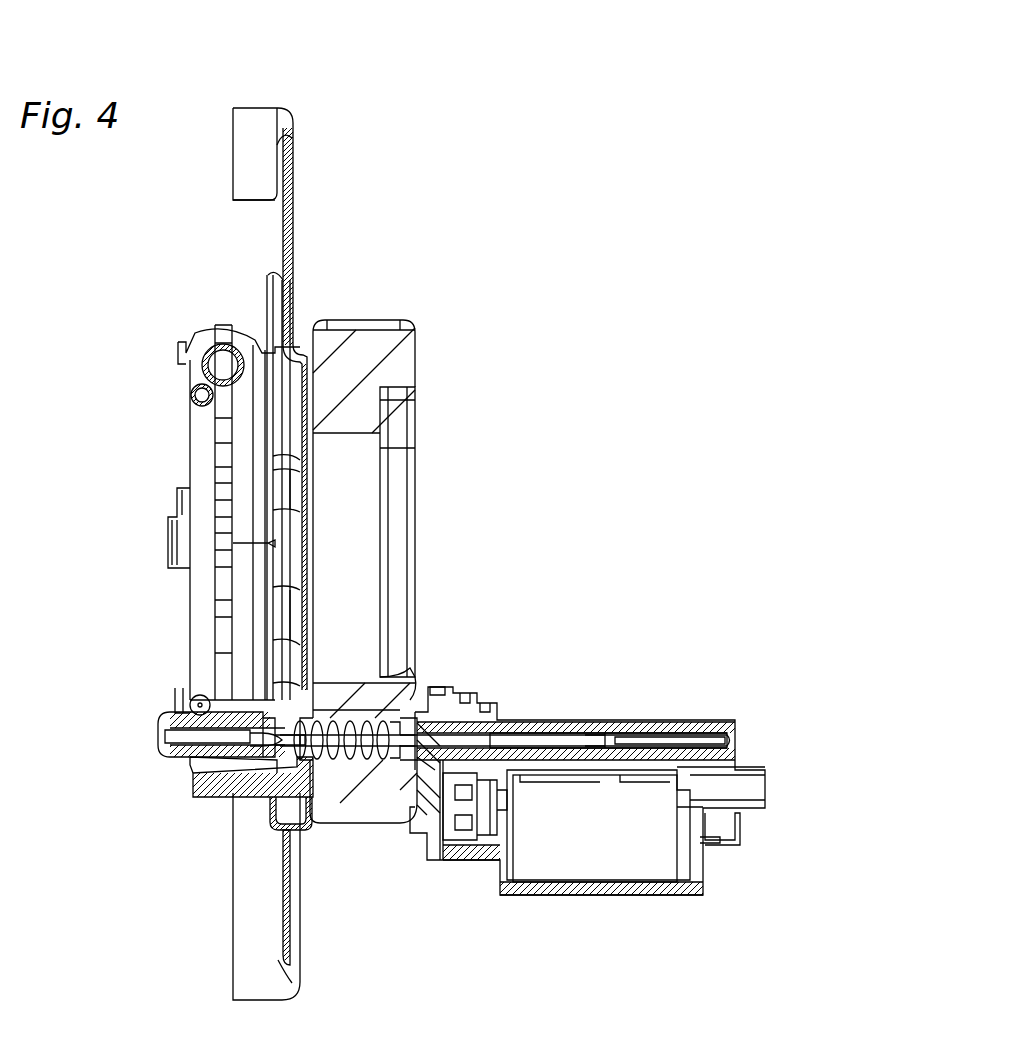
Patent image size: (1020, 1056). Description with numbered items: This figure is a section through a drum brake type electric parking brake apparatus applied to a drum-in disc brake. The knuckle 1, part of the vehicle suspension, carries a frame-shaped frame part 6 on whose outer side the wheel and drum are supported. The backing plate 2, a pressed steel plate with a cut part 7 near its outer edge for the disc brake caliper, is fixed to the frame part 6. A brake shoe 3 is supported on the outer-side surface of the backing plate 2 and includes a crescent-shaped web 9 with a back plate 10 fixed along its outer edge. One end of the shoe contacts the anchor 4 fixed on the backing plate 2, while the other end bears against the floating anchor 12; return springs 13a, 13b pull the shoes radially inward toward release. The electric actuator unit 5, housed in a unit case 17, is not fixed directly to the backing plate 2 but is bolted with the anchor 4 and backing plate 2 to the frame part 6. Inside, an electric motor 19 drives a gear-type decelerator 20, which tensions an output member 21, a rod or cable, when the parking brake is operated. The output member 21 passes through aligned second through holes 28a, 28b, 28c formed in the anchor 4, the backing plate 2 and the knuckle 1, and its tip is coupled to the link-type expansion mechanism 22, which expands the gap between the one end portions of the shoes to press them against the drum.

The knuckle 1 is at (372, 343).
The backing plate 2 is at (258, 153).
The brake shoe 3 is at (200, 423).
The anchor 4 is at (212, 789).
The electric actuator unit 5 is at (620, 720).
The frame part 6 is at (397, 375).
The cut part 7 is at (250, 200).
The web 9 is at (222, 584).
The back plate 10 is at (200, 578).
The floating anchor 12 is at (187, 343).
The return spring 13a is at (191, 395).
The return spring 13b is at (192, 704).
The unit case 17 is at (600, 890).
The electric motor 19 is at (568, 862).
The gear-type decelerator 20 is at (463, 790).
The output member 21 is at (355, 748).
The link-type expansion mechanism 22 is at (172, 763).
The second through hole 28a is at (275, 770).
The second through hole 28b is at (313, 750).
The second through hole 28c is at (410, 680).